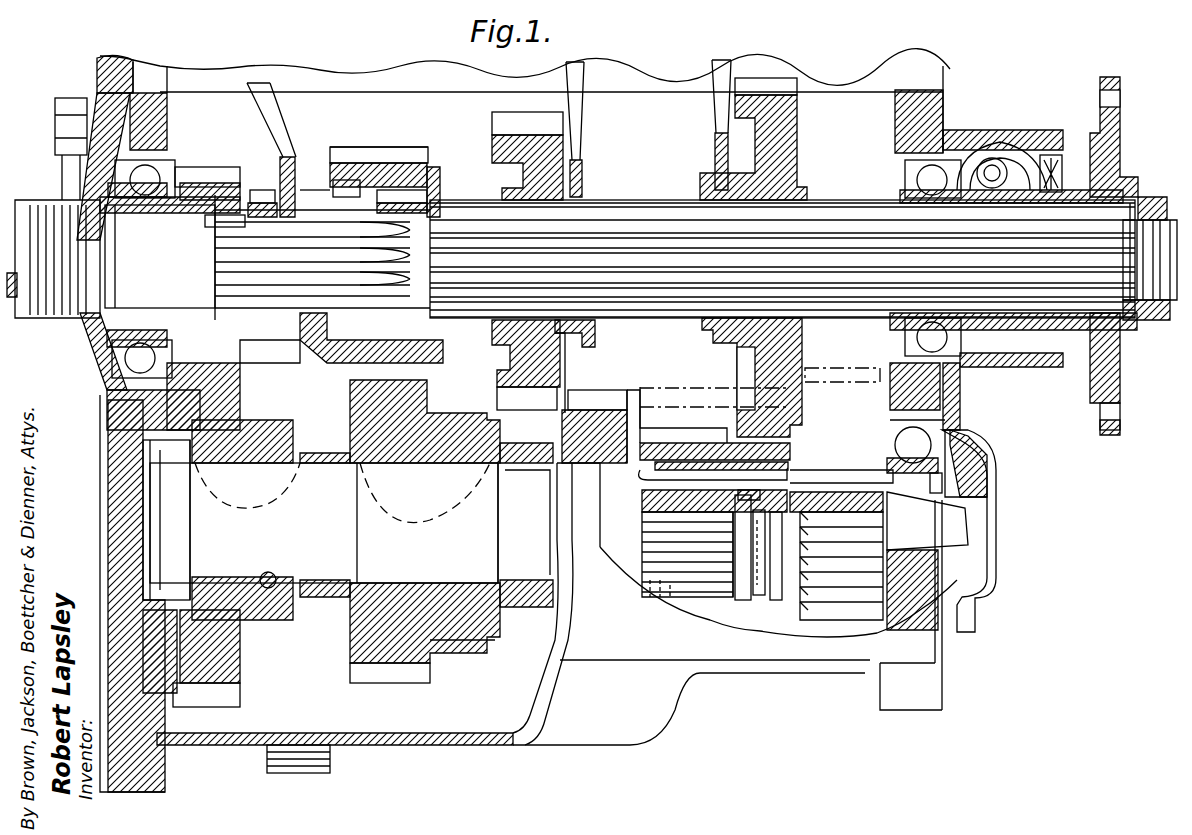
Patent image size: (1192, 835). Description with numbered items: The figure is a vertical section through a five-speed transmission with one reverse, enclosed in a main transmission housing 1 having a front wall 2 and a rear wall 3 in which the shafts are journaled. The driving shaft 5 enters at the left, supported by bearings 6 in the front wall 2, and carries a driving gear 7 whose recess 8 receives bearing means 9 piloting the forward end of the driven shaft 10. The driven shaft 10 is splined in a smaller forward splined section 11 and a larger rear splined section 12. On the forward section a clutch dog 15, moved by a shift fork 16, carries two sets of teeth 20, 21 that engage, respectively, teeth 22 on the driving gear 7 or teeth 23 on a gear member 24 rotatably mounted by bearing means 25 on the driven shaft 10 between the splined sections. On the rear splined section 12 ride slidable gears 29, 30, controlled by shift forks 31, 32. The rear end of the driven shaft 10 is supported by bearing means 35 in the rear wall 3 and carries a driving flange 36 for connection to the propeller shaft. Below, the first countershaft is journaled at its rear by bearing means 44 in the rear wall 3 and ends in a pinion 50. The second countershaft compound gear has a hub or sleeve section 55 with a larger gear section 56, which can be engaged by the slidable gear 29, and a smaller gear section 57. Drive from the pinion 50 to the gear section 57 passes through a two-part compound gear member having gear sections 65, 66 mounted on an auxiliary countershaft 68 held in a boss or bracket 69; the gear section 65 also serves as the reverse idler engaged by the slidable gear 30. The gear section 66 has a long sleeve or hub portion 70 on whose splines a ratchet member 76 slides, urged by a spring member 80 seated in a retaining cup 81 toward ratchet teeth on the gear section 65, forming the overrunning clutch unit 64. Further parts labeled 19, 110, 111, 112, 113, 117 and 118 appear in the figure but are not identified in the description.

The main transmission housing 1 is at (428, 752).
The front wall 2 is at (160, 700).
The rear wall 3 is at (935, 112).
The driving shaft 5 is at (22, 225).
The bearings 6 is at (160, 165).
The driving gear 7 is at (190, 180).
The recess 8 is at (205, 178).
The bearing means 9 is at (160, 300).
The driven shaft 10 is at (458, 194).
The forward splined section 11 is at (313, 195).
The splined section 12 is at (642, 212).
The clutch dog 15 is at (290, 330).
The shift fork 16 is at (280, 110).
The gear 19 is at (495, 648).
The teeth 20 is at (262, 200).
The teeth 21 is at (303, 185).
The teeth 22 is at (225, 205).
The teeth 23 is at (340, 180).
The gear member 24 is at (370, 147).
The bearing means 25 is at (385, 195).
The slidable gear 29 is at (522, 118).
The slidable gear 30 is at (798, 100).
The shift fork 31 is at (586, 98).
The shift fork 32 is at (710, 98).
The bearing means 35 is at (915, 178).
The driving flange 36 is at (1085, 160).
The bearing means 44 is at (930, 447).
The pinion 50 is at (833, 460).
The hub or sleeve section 55 is at (635, 400).
The gear section 56 is at (588, 400).
The gear section 57 is at (672, 435).
The overrunning clutch unit 64 is at (725, 600).
The gear section 65 is at (828, 368).
The gear section 66 is at (700, 395).
The auxiliary countershaft 68 is at (618, 545).
The boss or bracket 69 is at (605, 410).
The sleeve or hub portion 70 is at (760, 492).
The ratchet member 76 is at (785, 610).
The spring member 80 is at (760, 600).
The retaining cup 81 is at (742, 605).
The countershaft gear 110 is at (318, 458).
The bracket 111 is at (540, 468).
The countershaft 112 is at (425, 520).
The countershaft bearing 113 is at (160, 465).
The pin 117 is at (270, 600).
The gear 118 is at (350, 650).